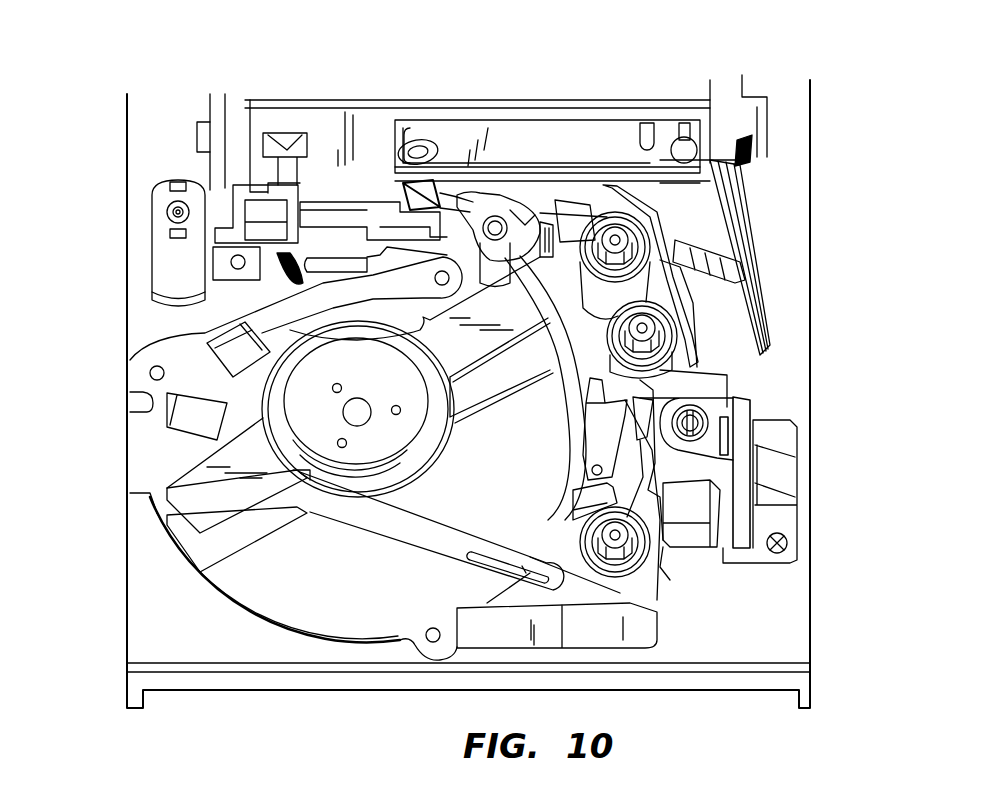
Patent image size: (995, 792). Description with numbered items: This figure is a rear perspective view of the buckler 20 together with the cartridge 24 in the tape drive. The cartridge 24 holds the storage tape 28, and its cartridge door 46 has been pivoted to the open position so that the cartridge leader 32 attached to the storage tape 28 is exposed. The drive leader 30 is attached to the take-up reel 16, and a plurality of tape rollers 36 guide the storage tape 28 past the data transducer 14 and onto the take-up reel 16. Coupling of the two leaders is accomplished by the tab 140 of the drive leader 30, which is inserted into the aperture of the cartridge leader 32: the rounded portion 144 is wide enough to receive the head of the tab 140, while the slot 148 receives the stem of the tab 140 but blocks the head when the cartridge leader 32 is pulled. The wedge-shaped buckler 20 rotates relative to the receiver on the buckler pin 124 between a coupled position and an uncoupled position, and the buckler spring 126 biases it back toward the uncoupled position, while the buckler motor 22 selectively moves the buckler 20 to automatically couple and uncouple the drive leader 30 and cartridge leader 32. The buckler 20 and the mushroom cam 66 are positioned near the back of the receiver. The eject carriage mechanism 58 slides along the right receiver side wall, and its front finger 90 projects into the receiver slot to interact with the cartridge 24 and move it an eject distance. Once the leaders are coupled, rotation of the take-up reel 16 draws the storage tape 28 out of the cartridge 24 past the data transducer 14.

The data transducer 14 is at (700, 386).
The take-up reel 16 is at (140, 453).
The buckler 20 is at (200, 334).
The buckler motor 22 is at (167, 262).
The cartridge 24 is at (298, 100).
The storage tape 28 is at (503, 125).
The drive leader 30 is at (503, 203).
The cartridge leader 32 is at (415, 140).
The tape rollers 36 is at (693, 347).
The cartridge door 46 is at (760, 253).
The eject carriage mechanism 58 is at (260, 210).
The mushroom cam 66 is at (272, 255).
The front finger 90 is at (287, 173).
The buckler pin 124 is at (567, 215).
The buckler spring 126 is at (187, 400).
The tab 140 is at (405, 183).
The rounded portion 144 is at (425, 150).
The slot 148 is at (462, 102).